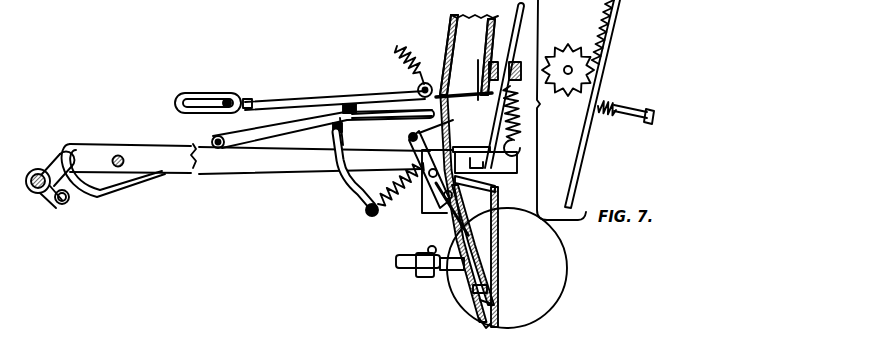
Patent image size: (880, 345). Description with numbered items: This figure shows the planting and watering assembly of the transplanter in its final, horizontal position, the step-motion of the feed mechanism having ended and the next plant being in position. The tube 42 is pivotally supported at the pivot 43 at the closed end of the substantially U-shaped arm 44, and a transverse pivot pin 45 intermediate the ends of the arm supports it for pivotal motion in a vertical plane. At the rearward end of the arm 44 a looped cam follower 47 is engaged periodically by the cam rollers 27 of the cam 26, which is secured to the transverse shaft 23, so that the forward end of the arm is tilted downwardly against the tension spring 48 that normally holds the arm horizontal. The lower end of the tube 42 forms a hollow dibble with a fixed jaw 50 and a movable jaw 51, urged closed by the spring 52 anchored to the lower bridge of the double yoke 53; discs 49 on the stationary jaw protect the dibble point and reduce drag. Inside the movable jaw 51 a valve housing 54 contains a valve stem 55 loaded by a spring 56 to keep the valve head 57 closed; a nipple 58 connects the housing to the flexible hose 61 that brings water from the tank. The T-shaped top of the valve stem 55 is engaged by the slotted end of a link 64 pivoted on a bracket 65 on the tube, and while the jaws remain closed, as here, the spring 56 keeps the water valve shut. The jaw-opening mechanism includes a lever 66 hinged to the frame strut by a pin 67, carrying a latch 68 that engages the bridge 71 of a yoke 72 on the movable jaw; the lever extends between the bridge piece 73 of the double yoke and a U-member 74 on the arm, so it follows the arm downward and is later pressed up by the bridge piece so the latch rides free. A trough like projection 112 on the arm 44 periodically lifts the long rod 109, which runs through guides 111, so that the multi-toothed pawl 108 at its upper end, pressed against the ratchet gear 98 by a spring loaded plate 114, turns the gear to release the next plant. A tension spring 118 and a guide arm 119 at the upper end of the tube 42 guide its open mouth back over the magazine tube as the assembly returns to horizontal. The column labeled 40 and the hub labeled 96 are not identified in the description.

The transverse shaft 23 is at (36, 181).
The cam 26 is at (39, 193).
The cam rollers 27 is at (66, 204).
The upright column 40 is at (447, 101).
The tube 42 is at (512, 81).
The pivot 43 is at (470, 148).
The arm 44 is at (215, 164).
The transverse pivot pin 45 is at (118, 156).
The looped cam follower 47 is at (116, 191).
The tension spring 48 is at (521, 125).
The discs 49 is at (547, 258).
The fixed jaw 50 is at (494, 300).
The movable jaw 51 is at (480, 314).
The spring 52 is at (402, 170).
The double yoke 53 is at (365, 207).
The valve housing 54 is at (498, 238).
The valve stem 55 is at (455, 203).
The spring 56 is at (463, 232).
The valve head 57 is at (490, 283).
The nipple 58 is at (455, 272).
The flexible hose 61 is at (405, 263).
The link 64 is at (431, 178).
The bracket 65 is at (491, 187).
The lever 66 is at (323, 131).
The pin 67 is at (216, 136).
The latch 68 is at (426, 116).
The bridge 71 is at (408, 137).
The yoke 72 is at (441, 112).
The bridge piece 73 is at (333, 128).
The U-member 74 is at (348, 104).
The gear hub 96 is at (567, 75).
The ratchet gear 98 is at (570, 46).
The multi-toothed pawl 108 is at (601, 58).
The rod 109 is at (518, 9).
The guides 111 is at (505, 69).
The trough like projection 112 is at (519, 164).
The spring loaded plate 114 is at (603, 104).
The tension spring 118 is at (396, 47).
The guide arm 119 is at (306, 101).